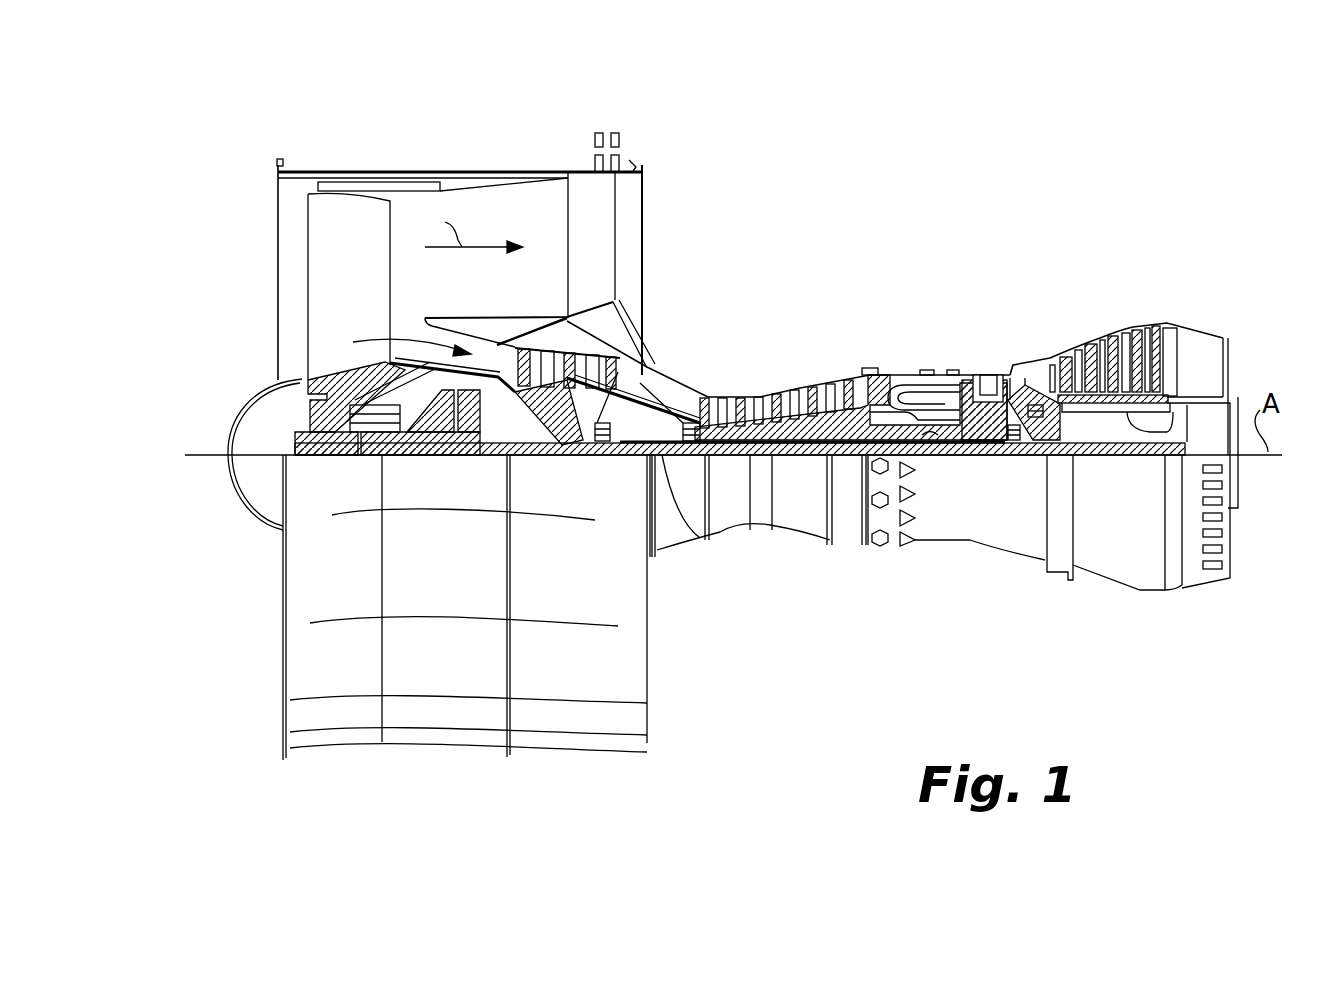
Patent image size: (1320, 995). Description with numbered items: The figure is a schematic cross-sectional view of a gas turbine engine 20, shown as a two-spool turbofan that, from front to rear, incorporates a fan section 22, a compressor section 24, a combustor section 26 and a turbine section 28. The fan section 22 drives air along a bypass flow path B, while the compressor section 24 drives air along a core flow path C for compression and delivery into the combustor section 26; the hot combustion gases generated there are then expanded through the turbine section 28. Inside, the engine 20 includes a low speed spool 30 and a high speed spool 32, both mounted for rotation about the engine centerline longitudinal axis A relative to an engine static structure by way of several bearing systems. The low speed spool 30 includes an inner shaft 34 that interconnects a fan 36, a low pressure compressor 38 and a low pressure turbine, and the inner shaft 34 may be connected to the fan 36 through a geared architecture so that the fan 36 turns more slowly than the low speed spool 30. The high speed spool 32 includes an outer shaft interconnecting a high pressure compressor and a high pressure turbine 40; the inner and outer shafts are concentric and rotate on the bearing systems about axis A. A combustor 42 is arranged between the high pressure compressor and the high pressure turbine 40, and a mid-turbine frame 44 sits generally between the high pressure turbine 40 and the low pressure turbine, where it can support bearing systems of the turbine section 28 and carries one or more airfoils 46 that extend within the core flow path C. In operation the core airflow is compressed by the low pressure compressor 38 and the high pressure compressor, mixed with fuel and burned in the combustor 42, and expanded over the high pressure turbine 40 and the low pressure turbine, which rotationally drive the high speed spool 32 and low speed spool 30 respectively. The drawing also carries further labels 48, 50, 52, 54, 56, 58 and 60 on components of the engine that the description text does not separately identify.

The gas turbine engine 20 is at (932, 207).
The fan section 22 is at (487, 137).
The compressor section 24 is at (887, 289).
The combustor section 26 is at (952, 289).
The turbine section 28 is at (962, 289).
The low speed spool 30 is at (805, 457).
The high speed spool 32 is at (845, 418).
The inner shaft 34 is at (1125, 415).
The fan 36 is at (848, 543).
The low pressure compressor 38 is at (362, 458).
The high pressure turbine 40 is at (700, 540).
The combustor 42 is at (360, 306).
The mid-turbine frame 44 is at (612, 320).
The airfoils 46 is at (1110, 345).
The geared architecture 48 is at (474, 458).
The outer shaft 50 is at (928, 448).
The high pressure compressor 52 is at (778, 428).
The high pressure turbine 54 is at (983, 372).
The combustor 56 is at (915, 396).
The mid-turbine frame 58 is at (1026, 364).
The airfoils 60 is at (1025, 385).